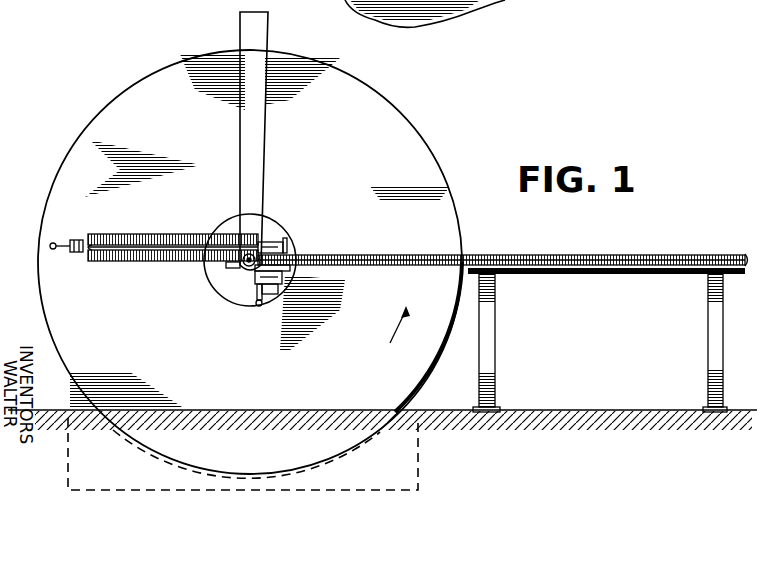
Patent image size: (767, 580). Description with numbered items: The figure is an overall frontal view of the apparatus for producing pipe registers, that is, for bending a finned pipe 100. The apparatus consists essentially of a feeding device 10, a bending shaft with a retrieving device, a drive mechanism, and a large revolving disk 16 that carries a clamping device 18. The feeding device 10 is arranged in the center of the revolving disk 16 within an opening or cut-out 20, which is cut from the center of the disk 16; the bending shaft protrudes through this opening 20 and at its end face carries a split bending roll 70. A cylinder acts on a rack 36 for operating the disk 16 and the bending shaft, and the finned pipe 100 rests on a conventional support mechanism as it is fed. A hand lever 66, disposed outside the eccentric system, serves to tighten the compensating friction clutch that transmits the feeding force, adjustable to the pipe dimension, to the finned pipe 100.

The feeding device 10 is at (256, 272).
The revolving disk 16 is at (392, 128).
The clamping device 18 is at (82, 240).
The opening or cut-out 20 is at (205, 279).
The rack 36 is at (708, 250).
The hand lever 66 is at (255, 305).
The split bending roll 70 is at (262, 230).
The finned pipe 100 is at (155, 240).